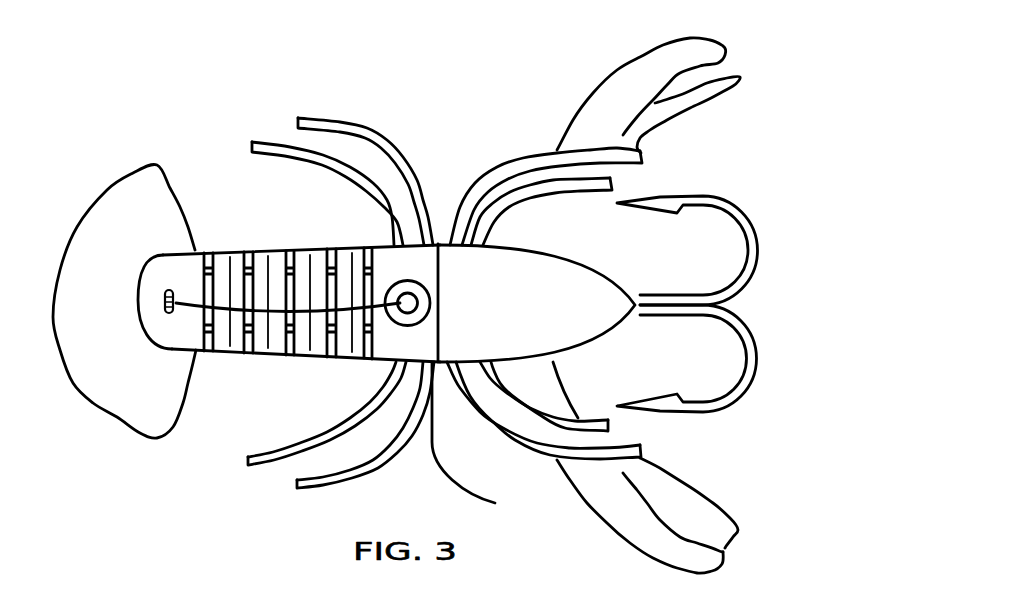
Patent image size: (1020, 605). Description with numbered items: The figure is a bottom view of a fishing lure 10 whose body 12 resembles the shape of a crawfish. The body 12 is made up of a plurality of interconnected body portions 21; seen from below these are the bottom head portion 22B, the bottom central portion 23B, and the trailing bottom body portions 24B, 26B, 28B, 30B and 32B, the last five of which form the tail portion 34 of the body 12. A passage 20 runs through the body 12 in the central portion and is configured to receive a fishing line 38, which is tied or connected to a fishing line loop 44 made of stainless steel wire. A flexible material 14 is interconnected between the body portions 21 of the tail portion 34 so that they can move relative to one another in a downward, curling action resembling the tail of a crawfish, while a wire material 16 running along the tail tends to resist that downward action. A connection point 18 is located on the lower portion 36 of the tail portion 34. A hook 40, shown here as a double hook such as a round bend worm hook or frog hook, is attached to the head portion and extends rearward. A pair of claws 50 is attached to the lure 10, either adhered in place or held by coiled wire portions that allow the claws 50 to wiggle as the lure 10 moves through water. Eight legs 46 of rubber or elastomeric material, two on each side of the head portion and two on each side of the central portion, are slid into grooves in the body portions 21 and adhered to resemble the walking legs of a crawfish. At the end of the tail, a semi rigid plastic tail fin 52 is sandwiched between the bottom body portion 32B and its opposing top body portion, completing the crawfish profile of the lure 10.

The fishing lure 10 is at (774, 76).
The body 12 is at (470, 236).
The flexible material 14 is at (222, 262).
The wire material 16 is at (262, 250).
The connection point 18 is at (167, 303).
The passage 20 is at (410, 300).
The body portions 21 is at (165, 343).
The bottom head portion 22B is at (597, 288).
The bottom central portion 23B is at (380, 248).
The bottom body portion 24B is at (340, 248).
The bottom body portion 26B is at (303, 249).
The bottom body portion 28B is at (254, 250).
The bottom body portion 30B is at (194, 250).
The bottom body portion 32B is at (143, 293).
The tail portion 34 is at (288, 372).
The lower portion 36 is at (177, 323).
The fishing line 38 is at (188, 290).
The hook 40 is at (760, 262).
The fishing line loop 44 is at (188, 303).
The legs 46 is at (292, 150).
The claws 50 is at (695, 98).
The tail fin 52 is at (119, 413).